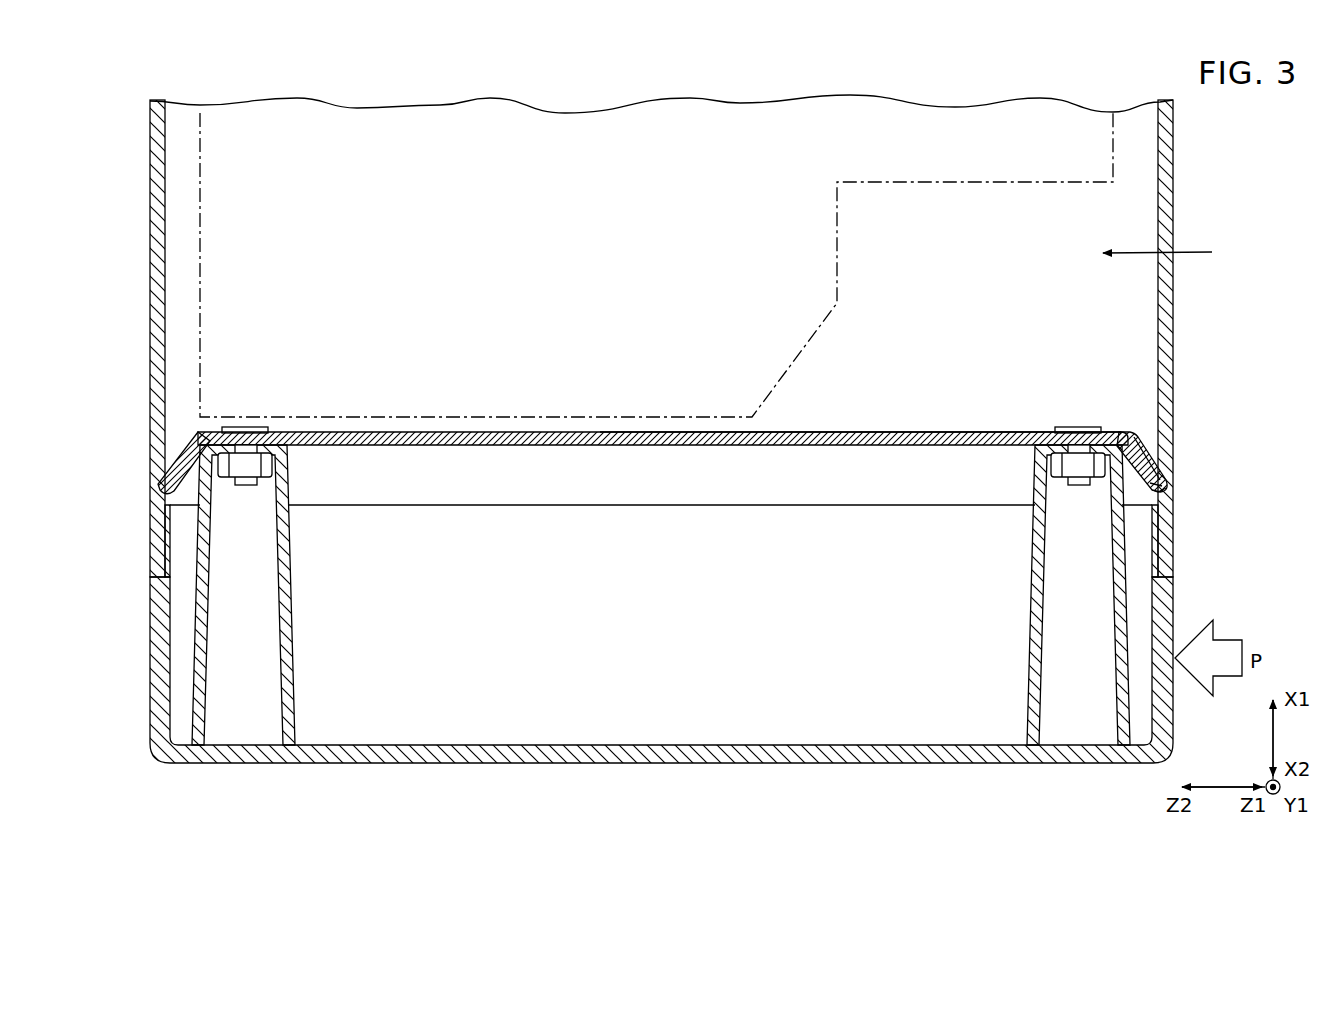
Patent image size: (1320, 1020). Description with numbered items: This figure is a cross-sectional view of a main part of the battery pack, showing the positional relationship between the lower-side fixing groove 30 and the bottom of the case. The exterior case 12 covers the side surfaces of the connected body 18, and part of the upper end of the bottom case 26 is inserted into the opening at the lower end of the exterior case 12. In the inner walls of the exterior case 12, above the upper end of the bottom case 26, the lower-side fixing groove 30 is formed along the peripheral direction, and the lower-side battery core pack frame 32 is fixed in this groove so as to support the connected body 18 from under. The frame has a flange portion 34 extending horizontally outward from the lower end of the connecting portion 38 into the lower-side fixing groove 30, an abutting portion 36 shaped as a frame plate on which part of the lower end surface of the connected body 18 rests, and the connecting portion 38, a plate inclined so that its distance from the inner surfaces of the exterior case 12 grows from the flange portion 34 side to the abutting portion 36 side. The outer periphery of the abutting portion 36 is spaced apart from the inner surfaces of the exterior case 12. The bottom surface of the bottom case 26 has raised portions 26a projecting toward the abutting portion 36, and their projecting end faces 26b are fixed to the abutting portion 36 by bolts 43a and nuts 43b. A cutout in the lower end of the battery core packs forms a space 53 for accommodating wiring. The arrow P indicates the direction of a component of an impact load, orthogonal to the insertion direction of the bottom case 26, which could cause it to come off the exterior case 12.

The exterior case 12 is at (1165, 222).
The connected body 18 is at (838, 252).
The bottom case 26 is at (158, 606).
The raised portion 26a is at (290, 591).
The projecting end face 26b is at (1110, 432).
The lower-side fixing groove 30 is at (1160, 488).
The lower-side battery core pack frame 32 is at (987, 420).
The flange portion 34 is at (1167, 491).
The abutting portion 36 is at (925, 432).
The connecting portion 38 is at (1145, 460).
The bolt 43a is at (1078, 427).
The nut 43b is at (1073, 465).
The space 53 is at (1171, 252).